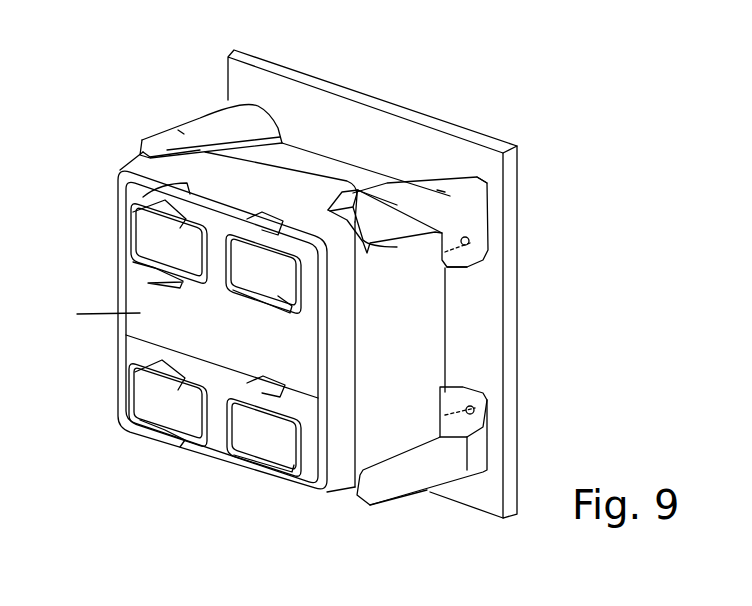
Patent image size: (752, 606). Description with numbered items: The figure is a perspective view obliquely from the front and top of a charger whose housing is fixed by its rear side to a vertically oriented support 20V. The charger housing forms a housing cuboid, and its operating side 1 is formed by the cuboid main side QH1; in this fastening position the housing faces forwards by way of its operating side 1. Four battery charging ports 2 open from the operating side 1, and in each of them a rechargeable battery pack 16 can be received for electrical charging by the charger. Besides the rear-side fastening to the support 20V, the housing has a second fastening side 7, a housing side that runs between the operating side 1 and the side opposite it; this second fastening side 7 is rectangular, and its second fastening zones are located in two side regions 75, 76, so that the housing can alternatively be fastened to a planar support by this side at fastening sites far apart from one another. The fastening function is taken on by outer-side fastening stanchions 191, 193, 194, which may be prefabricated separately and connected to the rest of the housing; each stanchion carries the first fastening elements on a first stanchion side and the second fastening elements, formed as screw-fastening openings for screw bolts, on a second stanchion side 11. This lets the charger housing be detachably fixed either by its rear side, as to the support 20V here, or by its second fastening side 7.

The operating side 1 is at (127, 393).
The battery charging port 2 is at (262, 268).
The rechargeable battery pack 16 is at (145, 177).
The cuboid main side QH1 is at (77, 315).
The fastening stanchion 191 is at (177, 131).
The second stanchion side 11 is at (180, 133).
The side region of second fastening side 76 is at (201, 133).
The second fastening side 7 is at (298, 177).
The side region of second fastening side 75 is at (393, 200).
The fastening stanchion 193 is at (470, 205).
The vertical support 20V is at (513, 338).
The fastening stanchion 194 is at (410, 487).